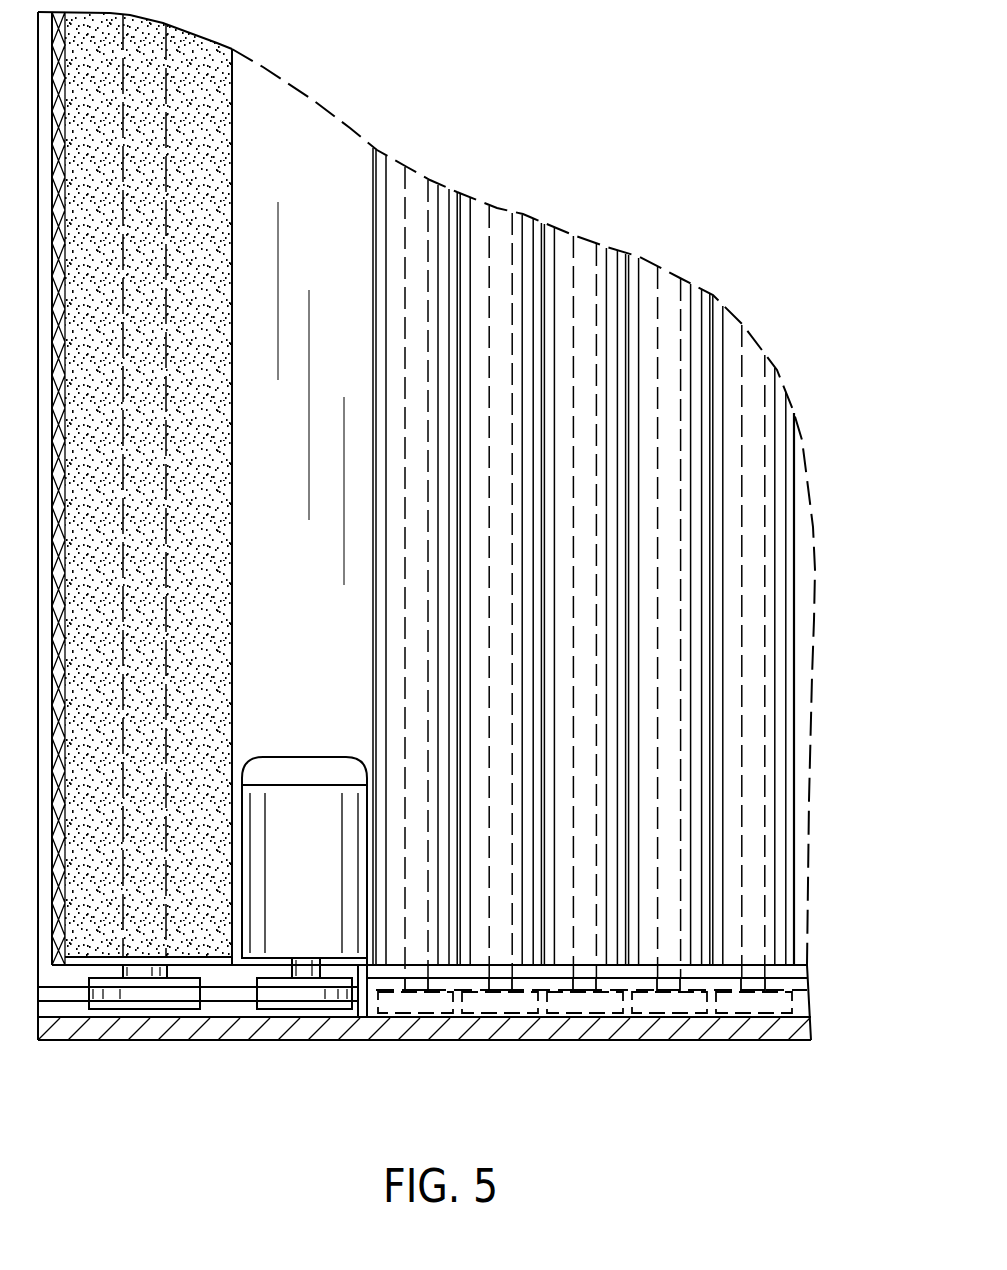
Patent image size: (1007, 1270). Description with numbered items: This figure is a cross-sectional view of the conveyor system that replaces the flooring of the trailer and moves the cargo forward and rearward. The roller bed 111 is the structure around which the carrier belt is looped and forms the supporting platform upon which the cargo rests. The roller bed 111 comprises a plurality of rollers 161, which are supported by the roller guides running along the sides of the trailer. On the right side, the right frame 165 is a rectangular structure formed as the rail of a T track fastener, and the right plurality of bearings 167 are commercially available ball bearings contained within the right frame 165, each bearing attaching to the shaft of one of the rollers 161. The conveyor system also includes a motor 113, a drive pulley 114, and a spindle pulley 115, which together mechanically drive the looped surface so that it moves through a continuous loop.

The roller bed 111 is at (798, 586).
The motor 113 is at (298, 757).
The drive pulley 114 is at (293, 1008).
The spindle pulley 115 is at (192, 122).
The plurality of rollers 161 is at (737, 397).
The right frame 165 is at (710, 1018).
The right plurality of bearings 167 is at (430, 1012).